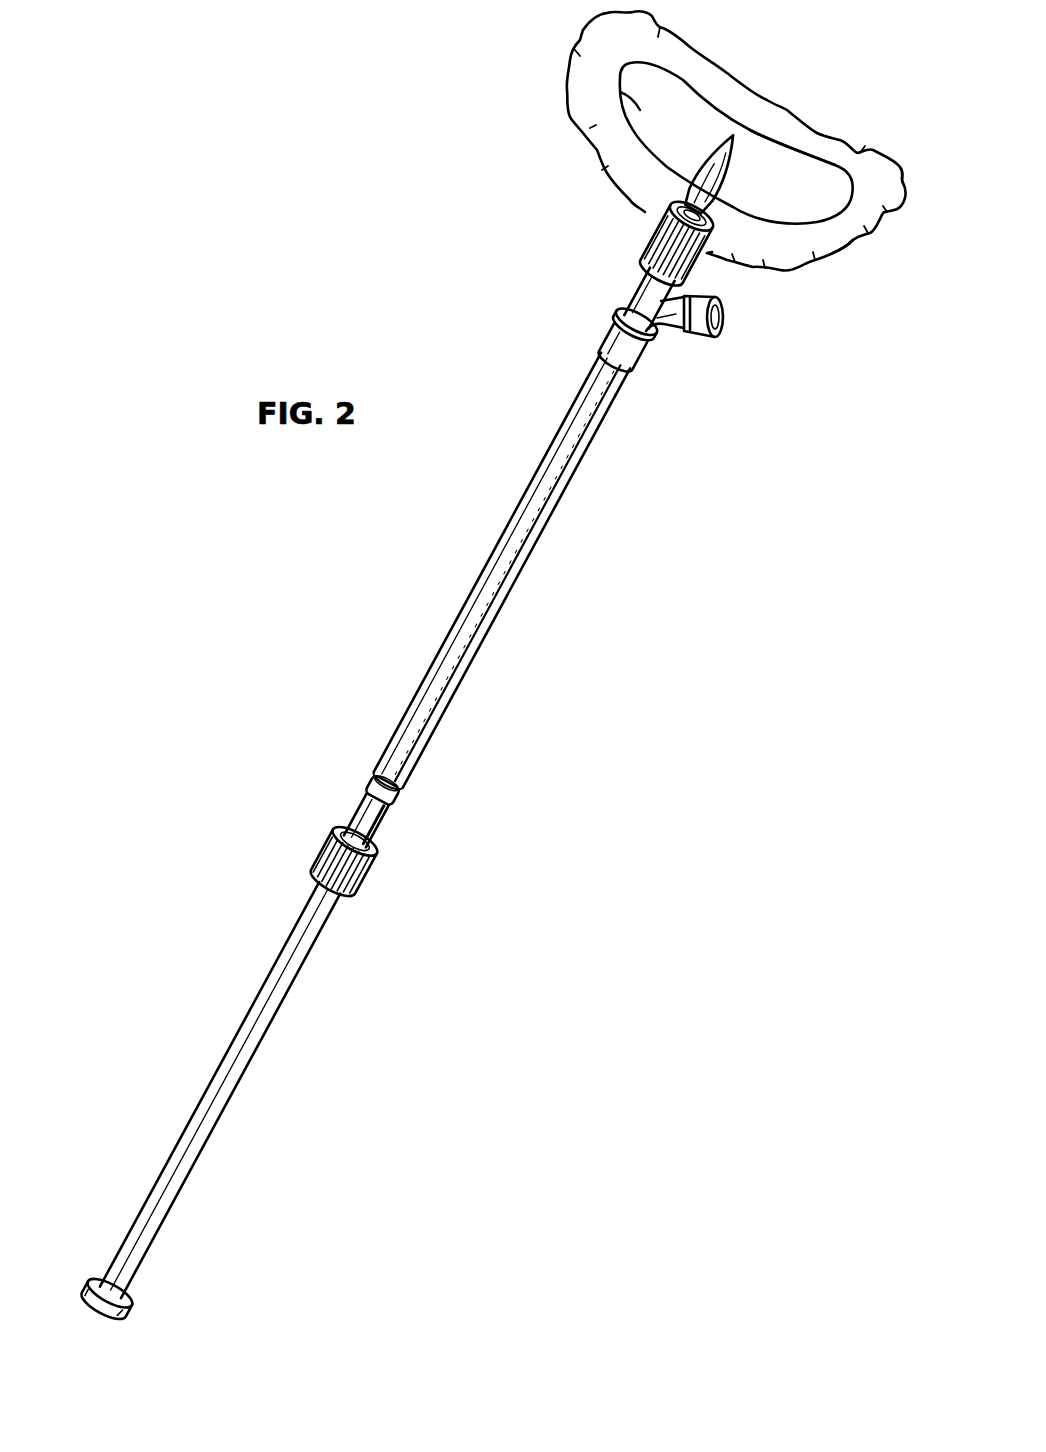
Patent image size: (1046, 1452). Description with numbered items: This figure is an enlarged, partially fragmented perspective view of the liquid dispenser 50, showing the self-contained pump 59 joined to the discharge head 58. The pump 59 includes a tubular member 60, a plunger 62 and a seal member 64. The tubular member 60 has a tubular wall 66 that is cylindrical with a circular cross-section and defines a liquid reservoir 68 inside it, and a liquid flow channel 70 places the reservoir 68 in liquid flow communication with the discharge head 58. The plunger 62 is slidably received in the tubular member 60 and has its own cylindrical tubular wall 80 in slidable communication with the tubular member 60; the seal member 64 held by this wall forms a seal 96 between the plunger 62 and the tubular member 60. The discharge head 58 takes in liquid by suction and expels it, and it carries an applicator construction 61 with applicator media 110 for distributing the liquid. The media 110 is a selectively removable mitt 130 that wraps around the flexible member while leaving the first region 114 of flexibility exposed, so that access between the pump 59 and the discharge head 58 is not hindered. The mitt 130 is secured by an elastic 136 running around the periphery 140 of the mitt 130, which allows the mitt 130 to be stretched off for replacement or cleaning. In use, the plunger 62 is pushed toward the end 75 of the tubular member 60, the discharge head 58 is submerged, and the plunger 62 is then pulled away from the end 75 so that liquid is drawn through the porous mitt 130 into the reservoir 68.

The liquid dispenser 50 is at (345, 170).
The discharge head 58 is at (541, 36).
The self-contained pump 59 is at (300, 686).
The tubular member 60 is at (485, 643).
The applicator construction 61 is at (703, 100).
The plunger 62 is at (250, 1068).
The seal member 64 is at (403, 792).
The tubular wall 66 is at (498, 540).
The liquid reservoir 68 is at (541, 528).
The liquid flow channel 70 is at (603, 381).
The end of the tubular member 75 is at (623, 377).
The tubular wall of the plunger 80 is at (200, 1167).
The seal 96 is at (375, 780).
The applicator media 110 is at (572, 122).
The first region of flexibility 114 is at (785, 157).
The mitt 130 is at (873, 158).
The elastic 136 is at (835, 220).
The periphery of the mitt 140 is at (653, 115).